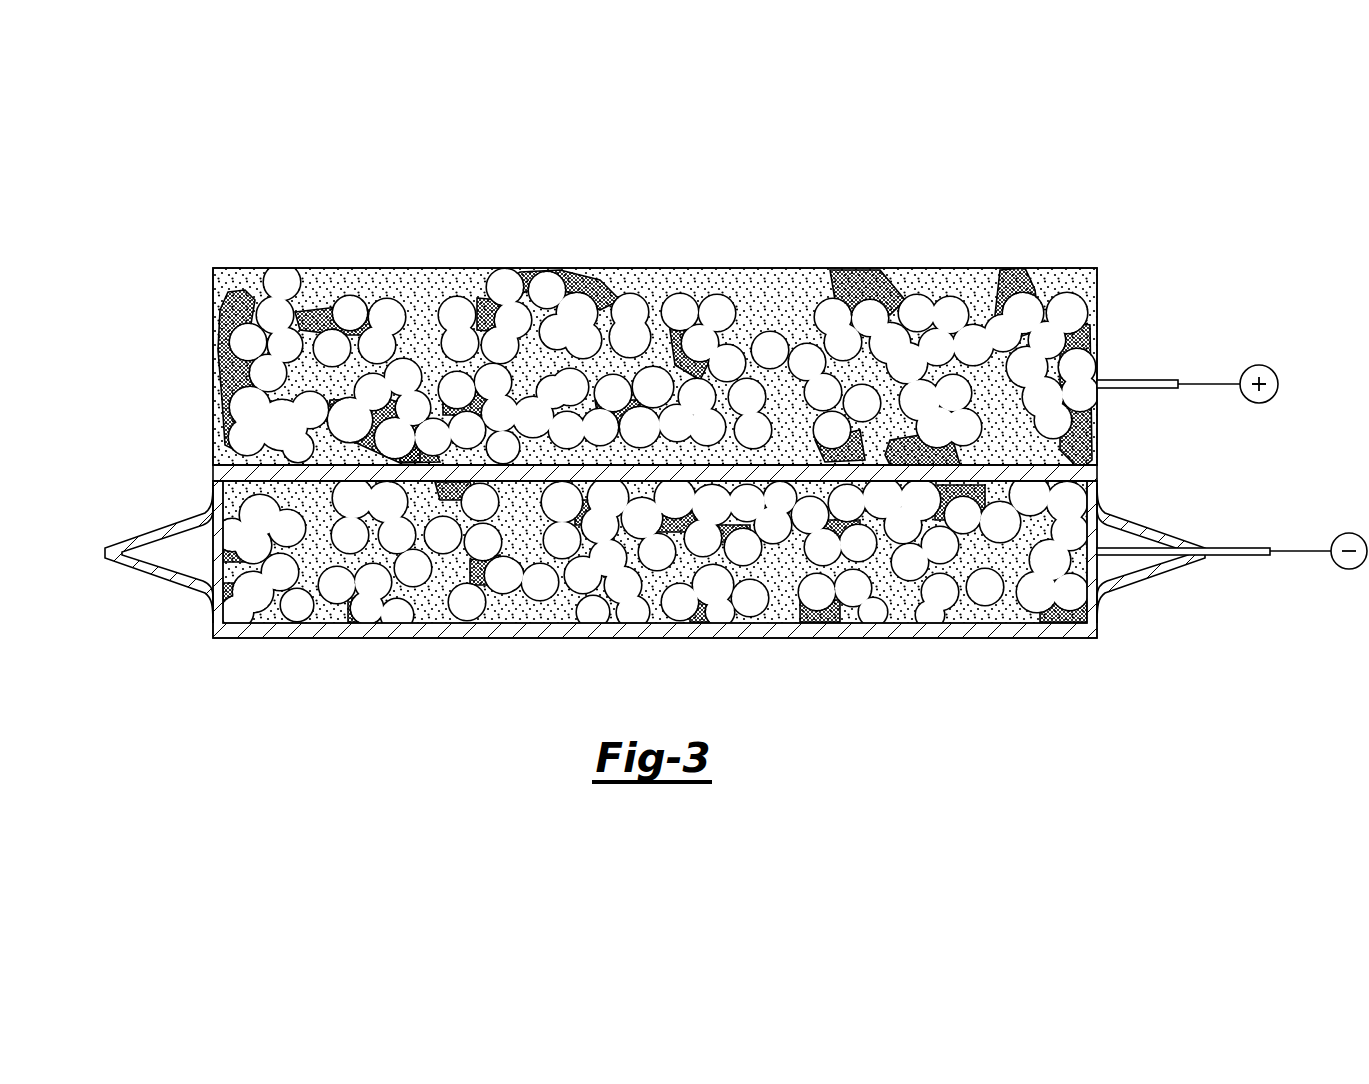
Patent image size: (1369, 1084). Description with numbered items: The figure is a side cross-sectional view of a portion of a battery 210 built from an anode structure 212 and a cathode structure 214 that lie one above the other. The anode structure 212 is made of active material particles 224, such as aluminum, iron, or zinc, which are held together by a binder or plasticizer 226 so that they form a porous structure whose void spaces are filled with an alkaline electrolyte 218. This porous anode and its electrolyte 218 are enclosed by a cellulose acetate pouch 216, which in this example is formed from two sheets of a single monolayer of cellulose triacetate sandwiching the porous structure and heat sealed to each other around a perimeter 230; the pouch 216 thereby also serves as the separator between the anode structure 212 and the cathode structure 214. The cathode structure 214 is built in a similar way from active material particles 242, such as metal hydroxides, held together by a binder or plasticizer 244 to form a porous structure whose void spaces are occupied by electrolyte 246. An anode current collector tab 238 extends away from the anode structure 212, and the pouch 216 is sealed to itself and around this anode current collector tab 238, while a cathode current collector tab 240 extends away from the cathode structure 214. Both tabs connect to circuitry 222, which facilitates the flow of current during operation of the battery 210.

The battery 210 is at (179, 691).
The anode structure 212 is at (102, 465).
The cathode structure 214 is at (173, 268).
The cellulose acetate pouch 216 is at (1057, 640).
The electrolyte 218 is at (452, 573).
The circuitry 222 is at (1208, 380).
The active material particles 224 is at (253, 505).
The binder or plasticizer 226 is at (318, 600).
The perimeter 230 is at (112, 562).
The anode current collector tab 238 is at (1117, 557).
The cathode current collector tab 240 is at (1140, 390).
The active material particles 242 is at (258, 284).
The binder or plasticizer 244 is at (545, 275).
The electrolyte 246 is at (335, 273).